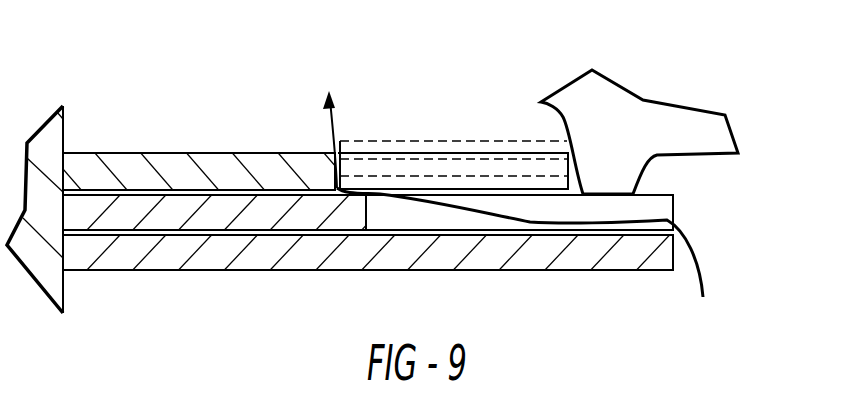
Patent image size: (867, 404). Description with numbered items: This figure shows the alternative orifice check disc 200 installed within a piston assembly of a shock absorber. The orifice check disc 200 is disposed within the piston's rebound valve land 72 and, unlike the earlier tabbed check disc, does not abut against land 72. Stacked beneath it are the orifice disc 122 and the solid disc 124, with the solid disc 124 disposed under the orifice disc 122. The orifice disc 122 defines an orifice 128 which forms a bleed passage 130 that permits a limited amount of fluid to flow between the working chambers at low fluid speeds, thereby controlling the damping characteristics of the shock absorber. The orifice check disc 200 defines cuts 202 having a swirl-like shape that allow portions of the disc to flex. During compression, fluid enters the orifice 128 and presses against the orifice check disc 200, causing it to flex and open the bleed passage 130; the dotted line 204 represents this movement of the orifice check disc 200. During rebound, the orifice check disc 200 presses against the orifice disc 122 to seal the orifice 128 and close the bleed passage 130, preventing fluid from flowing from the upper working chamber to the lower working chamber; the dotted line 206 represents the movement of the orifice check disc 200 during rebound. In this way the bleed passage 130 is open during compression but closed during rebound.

The orifice check disc 200 is at (120, 153).
The orifice disc 122 is at (175, 208).
The solid disc 124 is at (132, 252).
The cuts 202 is at (336, 150).
The dotted line 204 is at (453, 140).
The dotted line 206 is at (503, 160).
The rebound valve land 72 is at (640, 175).
The orifice 128 is at (652, 205).
The bleed passage 130 is at (480, 217).